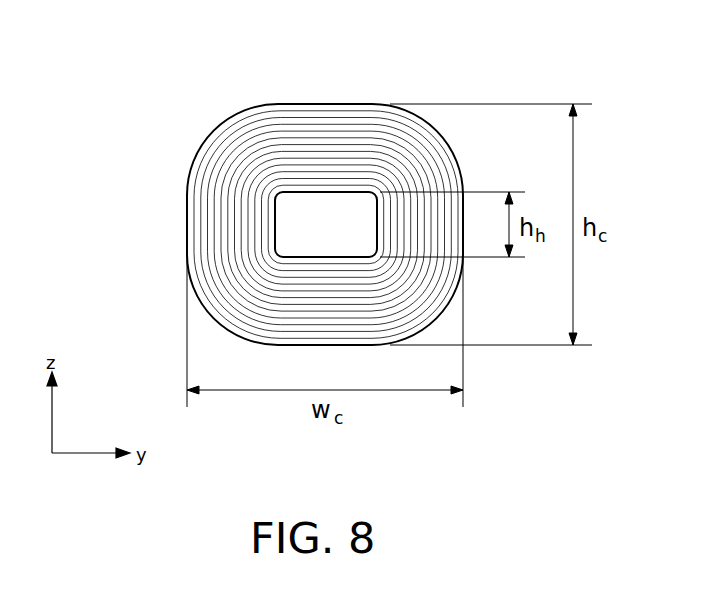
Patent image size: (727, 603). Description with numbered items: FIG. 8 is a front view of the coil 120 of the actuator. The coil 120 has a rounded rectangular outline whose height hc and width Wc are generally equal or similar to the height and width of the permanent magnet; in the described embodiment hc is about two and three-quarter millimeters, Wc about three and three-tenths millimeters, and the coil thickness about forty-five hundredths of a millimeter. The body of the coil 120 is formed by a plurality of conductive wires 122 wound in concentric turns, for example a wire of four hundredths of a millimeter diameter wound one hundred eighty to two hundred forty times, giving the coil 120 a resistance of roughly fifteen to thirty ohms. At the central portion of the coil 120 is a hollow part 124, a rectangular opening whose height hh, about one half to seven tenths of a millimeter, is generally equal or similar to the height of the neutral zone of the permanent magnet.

The coil 120 is at (423, 86).
The conductive wires 122 is at (200, 215).
The hollow part 124 is at (320, 205).